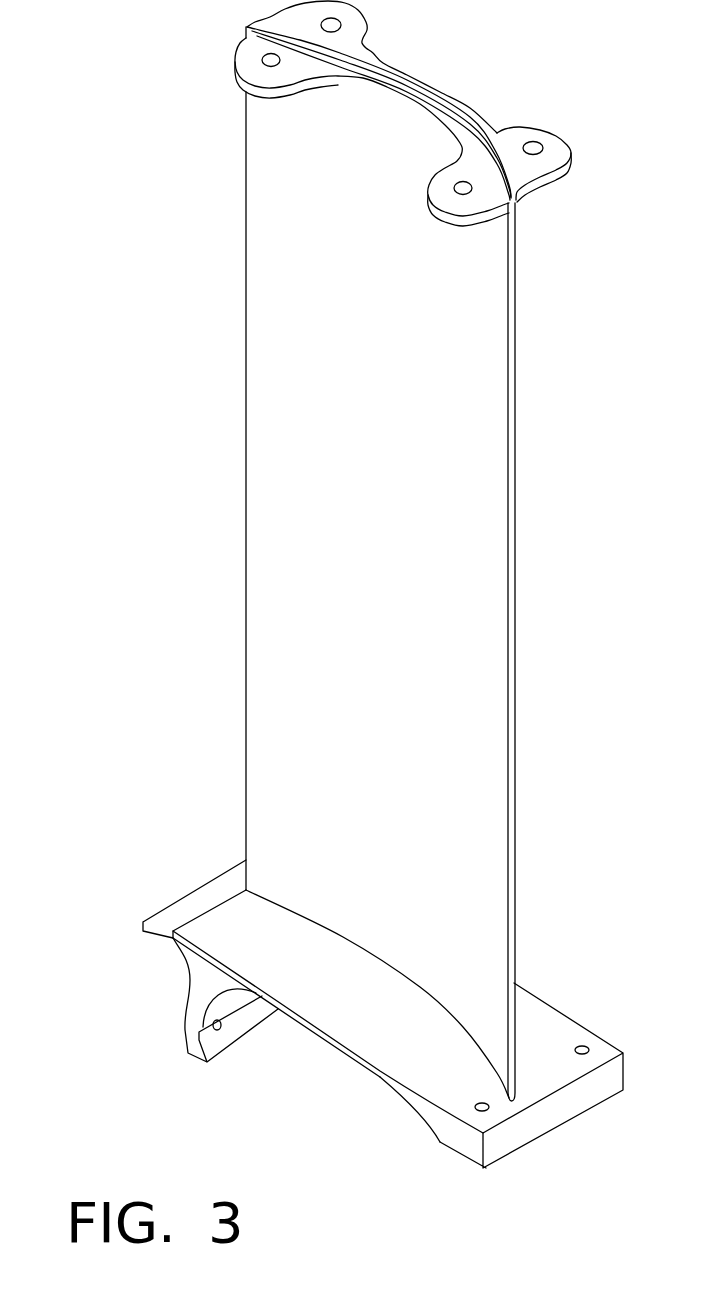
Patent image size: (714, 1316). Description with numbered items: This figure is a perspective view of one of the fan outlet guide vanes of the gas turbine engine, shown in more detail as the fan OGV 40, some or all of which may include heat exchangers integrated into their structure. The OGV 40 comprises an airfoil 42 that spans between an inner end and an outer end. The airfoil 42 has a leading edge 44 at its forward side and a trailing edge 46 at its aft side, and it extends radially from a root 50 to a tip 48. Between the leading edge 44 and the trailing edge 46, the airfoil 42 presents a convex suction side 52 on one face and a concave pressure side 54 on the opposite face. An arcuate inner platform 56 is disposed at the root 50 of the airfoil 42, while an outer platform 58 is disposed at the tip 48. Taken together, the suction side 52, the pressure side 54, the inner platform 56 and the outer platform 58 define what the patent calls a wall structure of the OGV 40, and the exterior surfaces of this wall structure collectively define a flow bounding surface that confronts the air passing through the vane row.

The fan OGV 40 is at (147, 78).
The airfoil 42 is at (265, 397).
The leading edge 44 is at (515, 588).
The trailing edge 46 is at (246, 528).
The tip 48 is at (386, 97).
The root 50 is at (340, 930).
The suction side 52 is at (510, 382).
The pressure side 54 is at (265, 255).
The inner platform 56 is at (542, 1028).
The outer platform 58 is at (550, 133).